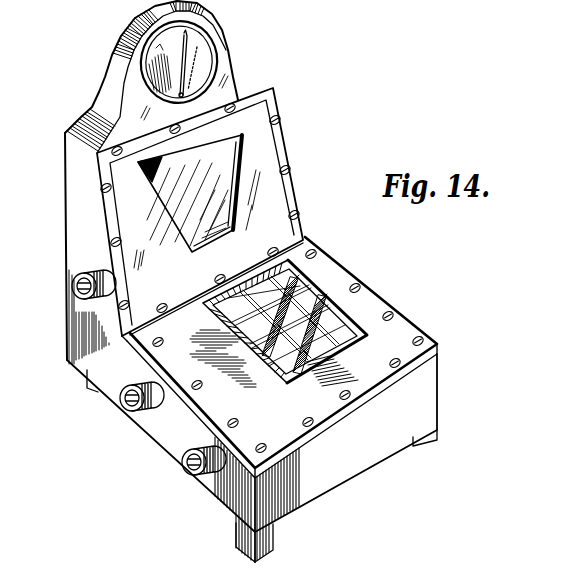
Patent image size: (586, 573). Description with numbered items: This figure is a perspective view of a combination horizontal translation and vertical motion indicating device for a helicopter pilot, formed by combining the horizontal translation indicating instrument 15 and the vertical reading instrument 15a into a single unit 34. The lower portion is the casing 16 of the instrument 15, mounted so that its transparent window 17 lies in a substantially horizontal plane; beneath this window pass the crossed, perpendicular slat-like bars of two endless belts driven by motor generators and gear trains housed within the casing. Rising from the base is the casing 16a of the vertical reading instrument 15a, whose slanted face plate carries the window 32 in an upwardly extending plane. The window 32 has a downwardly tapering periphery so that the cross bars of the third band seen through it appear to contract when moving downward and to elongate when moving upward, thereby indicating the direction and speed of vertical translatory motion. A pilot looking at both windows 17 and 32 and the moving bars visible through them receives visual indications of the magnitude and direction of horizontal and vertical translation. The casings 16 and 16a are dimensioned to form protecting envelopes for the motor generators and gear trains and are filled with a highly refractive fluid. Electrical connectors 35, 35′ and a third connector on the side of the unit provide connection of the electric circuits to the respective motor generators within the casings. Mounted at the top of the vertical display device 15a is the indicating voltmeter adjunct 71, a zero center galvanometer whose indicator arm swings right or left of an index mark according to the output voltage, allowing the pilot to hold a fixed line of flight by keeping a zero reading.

The instrument 15 is at (368, 284).
The vertical reading instrument 15a is at (291, 146).
The casing 16 is at (429, 386).
The casing 16a is at (276, 103).
The transparent window 17 is at (333, 324).
The window 32 is at (188, 220).
The single unit 34 is at (326, 218).
The electrical connector 35 is at (192, 473).
The electrical connector 35′ is at (128, 408).
The indicating voltmeter adjunct 71 is at (233, 68).